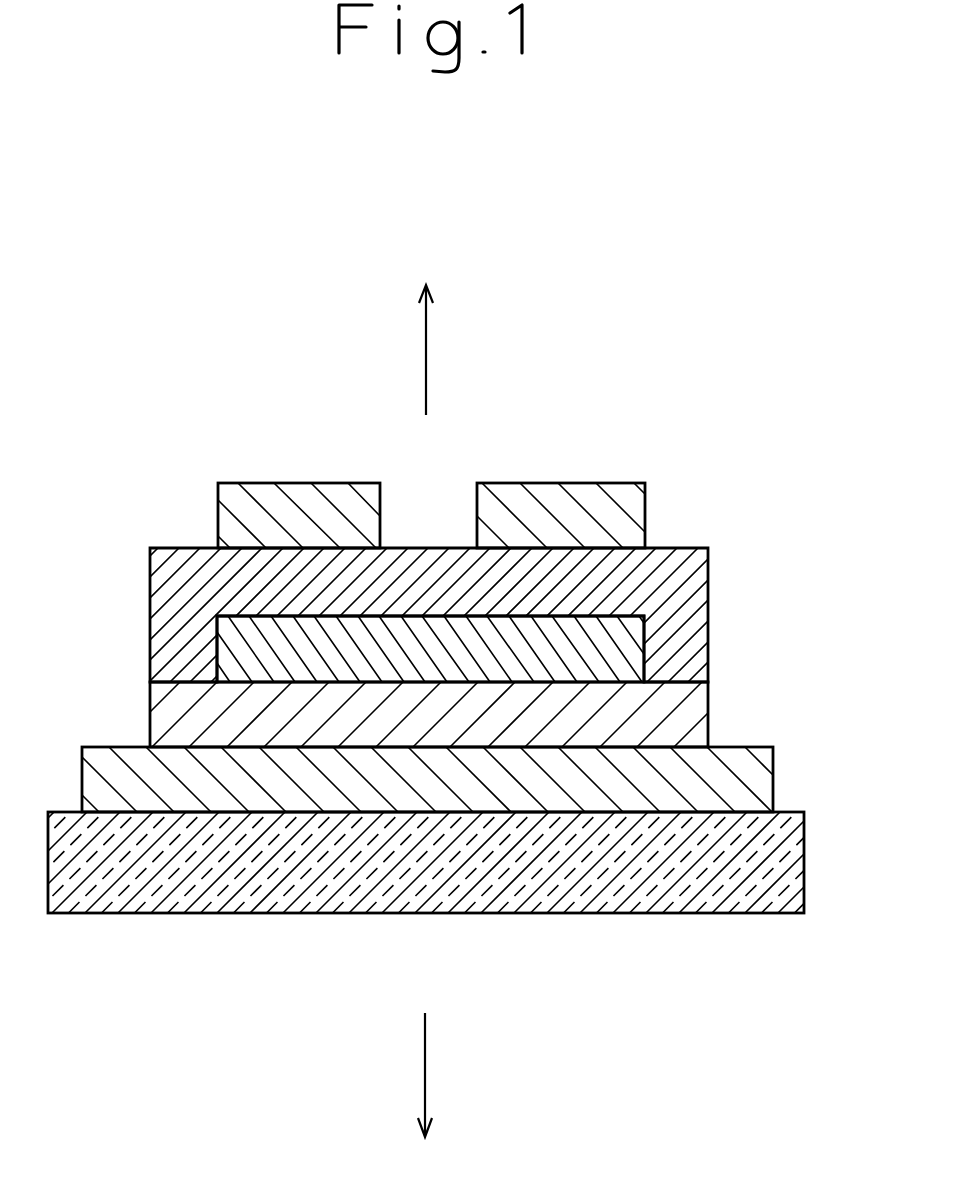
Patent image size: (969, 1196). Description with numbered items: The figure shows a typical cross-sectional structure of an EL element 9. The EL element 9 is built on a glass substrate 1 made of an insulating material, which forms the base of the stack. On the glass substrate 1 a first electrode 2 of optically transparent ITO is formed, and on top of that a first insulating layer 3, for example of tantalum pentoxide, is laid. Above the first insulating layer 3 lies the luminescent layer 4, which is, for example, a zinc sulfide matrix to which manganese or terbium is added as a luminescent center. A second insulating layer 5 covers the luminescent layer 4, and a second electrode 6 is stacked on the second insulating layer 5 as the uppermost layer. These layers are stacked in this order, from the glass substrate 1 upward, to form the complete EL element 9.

The glass substrate 1 is at (792, 850).
The first electrode 2 is at (762, 780).
The first insulating layer 3 is at (697, 712).
The luminescent layer 4 is at (632, 652).
The second insulating layer 5 is at (698, 582).
The second electrode 6 is at (636, 498).
The EL element 9 is at (290, 392).